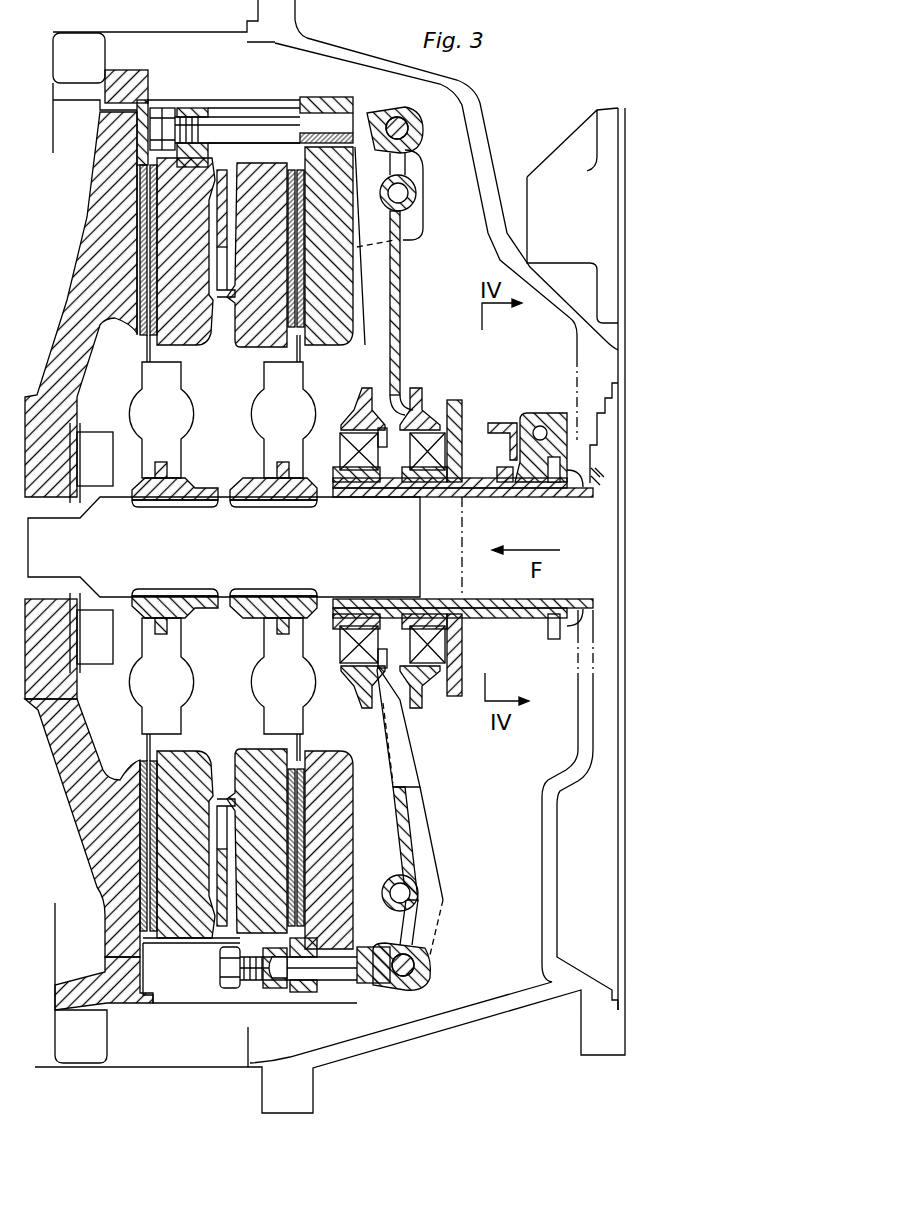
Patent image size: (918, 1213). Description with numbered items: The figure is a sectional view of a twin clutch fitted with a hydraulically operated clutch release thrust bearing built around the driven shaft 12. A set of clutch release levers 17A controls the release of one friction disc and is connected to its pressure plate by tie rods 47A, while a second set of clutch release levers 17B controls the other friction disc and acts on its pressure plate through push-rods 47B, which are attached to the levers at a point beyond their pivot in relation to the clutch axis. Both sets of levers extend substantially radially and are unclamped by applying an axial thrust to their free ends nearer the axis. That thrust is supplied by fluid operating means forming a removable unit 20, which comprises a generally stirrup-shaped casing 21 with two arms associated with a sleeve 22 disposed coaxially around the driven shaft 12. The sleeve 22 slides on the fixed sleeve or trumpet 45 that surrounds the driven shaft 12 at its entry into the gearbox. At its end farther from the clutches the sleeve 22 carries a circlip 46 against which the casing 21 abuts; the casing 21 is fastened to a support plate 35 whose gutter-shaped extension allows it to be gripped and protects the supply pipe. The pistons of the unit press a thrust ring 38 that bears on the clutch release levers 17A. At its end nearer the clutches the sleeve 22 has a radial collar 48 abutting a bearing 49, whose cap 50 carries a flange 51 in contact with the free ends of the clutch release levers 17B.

The driven shaft 12 is at (288, 561).
The clutch release levers 17A is at (413, 252).
The clutch release levers 17B is at (440, 852).
The removable unit 20 is at (512, 403).
The casing 21 is at (543, 408).
The sleeve 22 is at (510, 490).
The support plate 35 is at (492, 417).
The thrust ring 38 is at (414, 385).
The fixed sleeve or trumpet 45 is at (548, 494).
The circlip 46 is at (579, 470).
The tie rods 47A is at (226, 125).
The push-rods 47B is at (332, 985).
The radial collar 48 is at (305, 465).
The bearing 49 is at (340, 450).
The cap 50 is at (349, 410).
The flange 51 is at (363, 400).